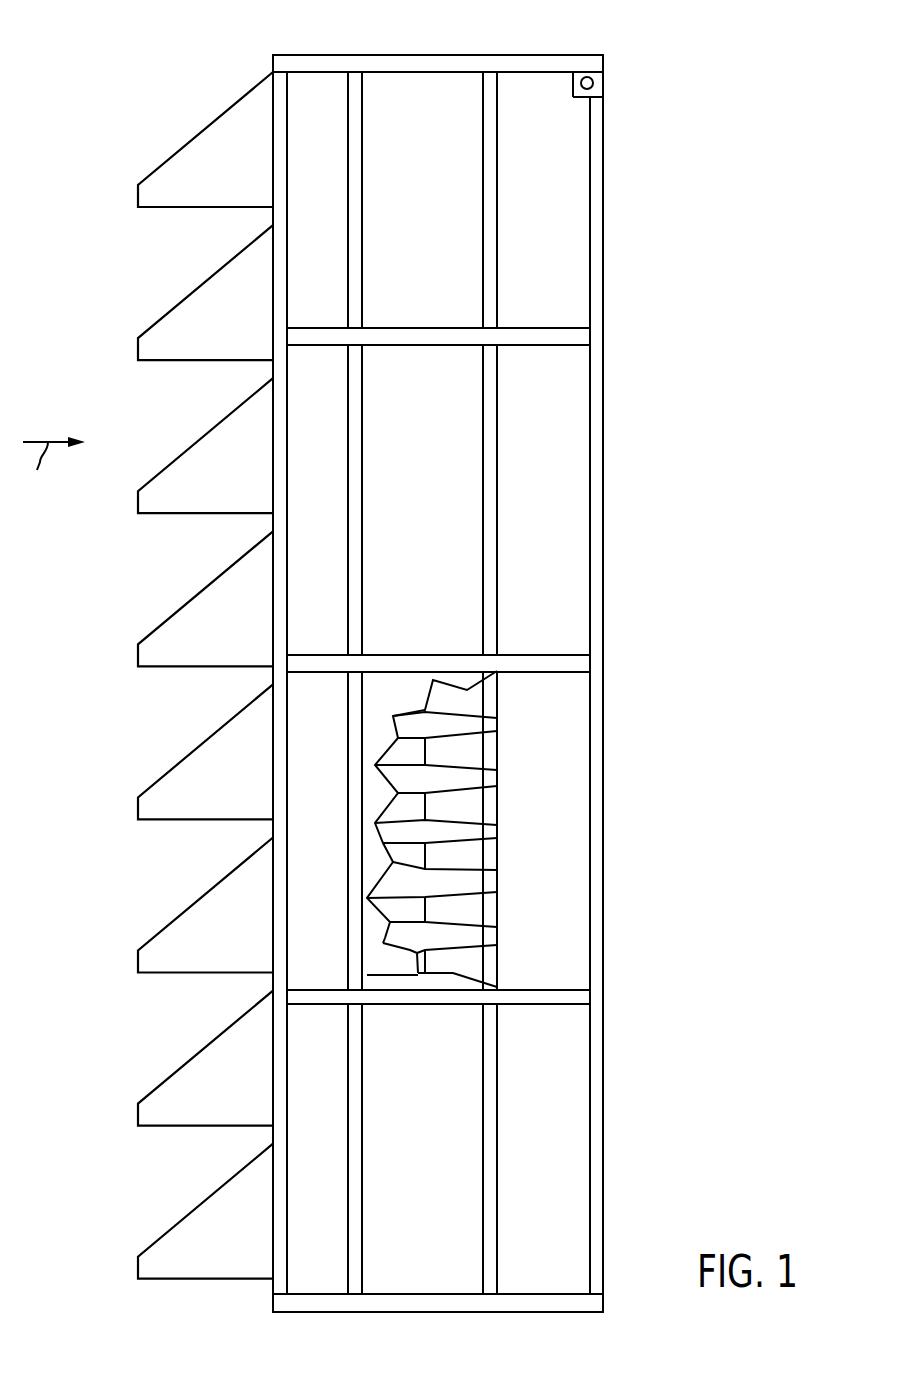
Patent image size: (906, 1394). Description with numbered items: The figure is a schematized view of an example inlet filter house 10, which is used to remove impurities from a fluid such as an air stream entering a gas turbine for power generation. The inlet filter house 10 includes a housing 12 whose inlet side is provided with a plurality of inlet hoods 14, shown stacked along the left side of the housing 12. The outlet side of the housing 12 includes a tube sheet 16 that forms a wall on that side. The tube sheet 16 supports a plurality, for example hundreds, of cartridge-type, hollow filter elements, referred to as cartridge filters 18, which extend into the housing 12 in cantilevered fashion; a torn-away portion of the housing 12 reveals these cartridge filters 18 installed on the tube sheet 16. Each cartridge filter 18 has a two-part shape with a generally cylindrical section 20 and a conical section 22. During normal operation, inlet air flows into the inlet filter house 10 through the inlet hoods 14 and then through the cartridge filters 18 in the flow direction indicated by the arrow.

The inlet filter house 10 is at (313, 656).
The housing 12 is at (312, 55).
The inlet hoods 14 is at (180, 607).
The tube sheet 16 is at (498, 777).
The cartridge filter 18 is at (450, 923).
The cylindrical section 20 is at (398, 926).
The conical section 22 is at (448, 888).